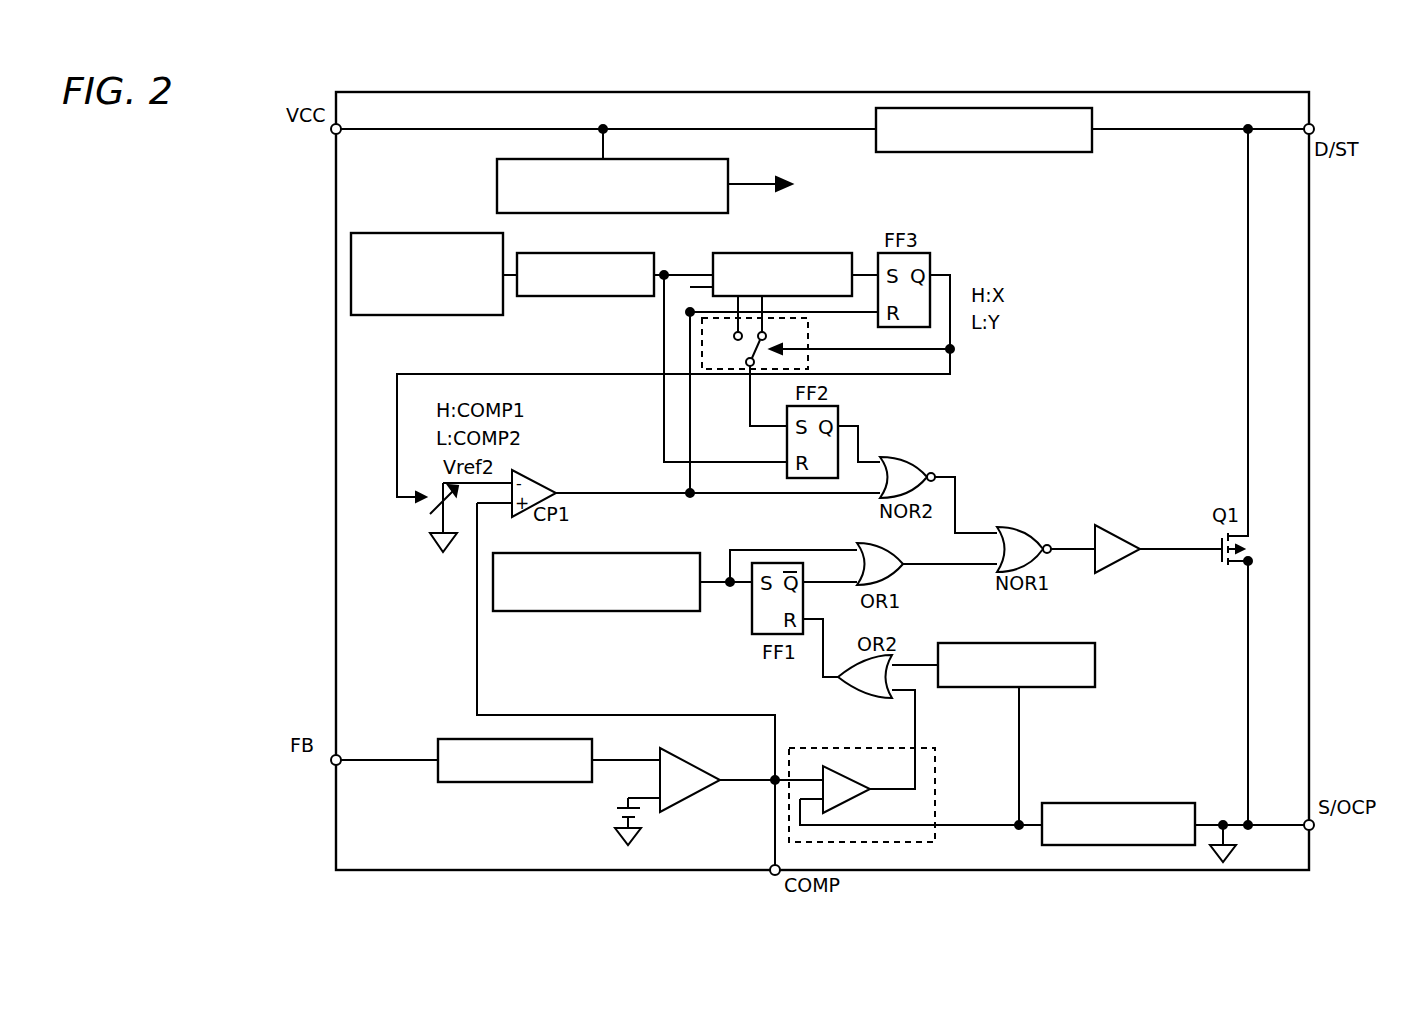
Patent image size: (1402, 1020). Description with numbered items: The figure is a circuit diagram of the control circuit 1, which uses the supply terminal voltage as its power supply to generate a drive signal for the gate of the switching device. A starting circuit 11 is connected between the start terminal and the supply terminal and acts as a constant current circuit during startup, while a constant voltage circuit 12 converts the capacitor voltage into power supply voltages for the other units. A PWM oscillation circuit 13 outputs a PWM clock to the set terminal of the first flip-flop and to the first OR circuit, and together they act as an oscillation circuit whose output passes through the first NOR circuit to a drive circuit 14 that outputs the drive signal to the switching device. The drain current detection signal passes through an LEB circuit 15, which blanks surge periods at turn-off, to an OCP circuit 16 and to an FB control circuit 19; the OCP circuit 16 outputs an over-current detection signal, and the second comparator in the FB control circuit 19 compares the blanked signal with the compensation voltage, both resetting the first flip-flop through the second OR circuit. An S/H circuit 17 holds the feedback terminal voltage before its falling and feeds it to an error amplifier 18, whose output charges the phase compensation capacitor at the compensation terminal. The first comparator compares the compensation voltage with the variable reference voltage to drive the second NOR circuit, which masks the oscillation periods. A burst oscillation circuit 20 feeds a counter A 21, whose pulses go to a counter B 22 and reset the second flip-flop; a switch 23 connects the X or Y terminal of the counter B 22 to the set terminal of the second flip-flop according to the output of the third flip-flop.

The control circuit 1 is at (1168, 92).
The starting circuit 11 is at (1063, 152).
The constant voltage circuit 12 is at (698, 159).
The PWM oscillation circuit 13 is at (652, 612).
The drive circuit 14 is at (1128, 535).
The leading edge blanking (LEB) circuit 15 is at (1120, 803).
The over-current protection (OCP) circuit 16 is at (1085, 630).
The sample and hold (S/H) circuit 17 is at (520, 783).
The error amplifier 18 is at (690, 795).
The feedback (FB) control circuit 19 is at (925, 748).
The burst oscillation circuit 20 is at (448, 233).
The counter A 21 is at (620, 253).
The counter B 22 is at (757, 253).
The switch 23 is at (808, 340).